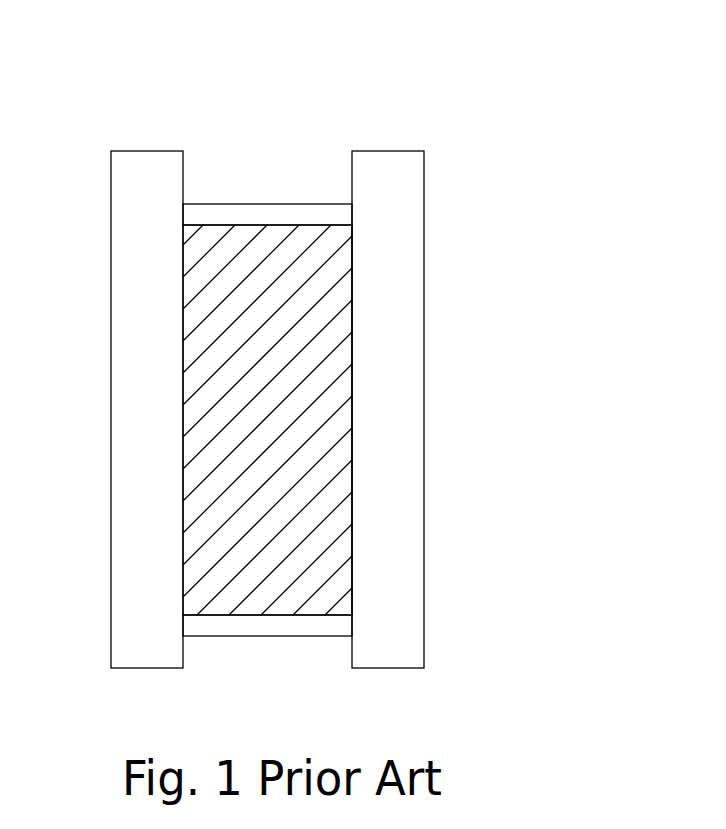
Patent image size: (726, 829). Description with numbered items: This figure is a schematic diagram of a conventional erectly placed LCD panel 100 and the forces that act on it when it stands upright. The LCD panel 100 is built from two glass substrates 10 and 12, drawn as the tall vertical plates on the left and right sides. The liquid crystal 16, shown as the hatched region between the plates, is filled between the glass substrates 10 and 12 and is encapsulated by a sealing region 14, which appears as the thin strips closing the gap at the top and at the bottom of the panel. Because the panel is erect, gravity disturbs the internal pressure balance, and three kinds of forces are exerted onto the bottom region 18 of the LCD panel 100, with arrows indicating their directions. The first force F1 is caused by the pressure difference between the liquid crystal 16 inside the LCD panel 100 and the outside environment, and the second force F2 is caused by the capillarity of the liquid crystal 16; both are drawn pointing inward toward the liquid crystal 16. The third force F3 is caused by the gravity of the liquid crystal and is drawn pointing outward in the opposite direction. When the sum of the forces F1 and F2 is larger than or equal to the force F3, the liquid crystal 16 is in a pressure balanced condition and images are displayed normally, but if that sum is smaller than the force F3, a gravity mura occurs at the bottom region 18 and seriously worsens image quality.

The LCD panel 100 is at (547, 131).
The glass substrate 10 is at (150, 167).
The glass substrate 12 is at (398, 167).
The sealing region 14 is at (270, 215).
The liquid crystal 16 is at (208, 315).
The bottom region 18 is at (352, 562).
The first force F1 is at (355, 543).
The second force F2 is at (355, 569).
The third force F3 is at (352, 591).